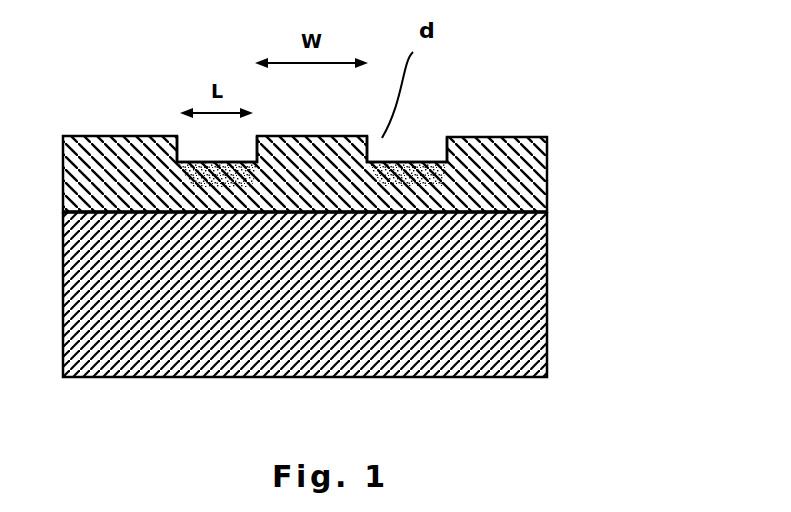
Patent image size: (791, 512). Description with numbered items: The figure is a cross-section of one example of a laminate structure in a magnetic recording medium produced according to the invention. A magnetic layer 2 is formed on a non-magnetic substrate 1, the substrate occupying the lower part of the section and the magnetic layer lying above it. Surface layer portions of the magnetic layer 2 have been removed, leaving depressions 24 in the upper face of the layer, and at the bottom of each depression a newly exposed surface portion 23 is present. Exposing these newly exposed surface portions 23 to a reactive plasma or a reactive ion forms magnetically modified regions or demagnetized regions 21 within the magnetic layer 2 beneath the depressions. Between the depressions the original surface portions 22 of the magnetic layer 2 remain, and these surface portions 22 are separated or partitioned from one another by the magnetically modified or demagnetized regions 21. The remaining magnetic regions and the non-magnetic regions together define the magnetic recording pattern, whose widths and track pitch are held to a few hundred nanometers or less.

The non-magnetic substrate 1 is at (520, 290).
The magnetic layer 2 is at (545, 177).
The magnetically modified region 21 is at (137, 137).
The surface of magnetic layer 22 is at (293, 137).
The exposed surface 23 is at (427, 161).
The depression 24 is at (405, 147).